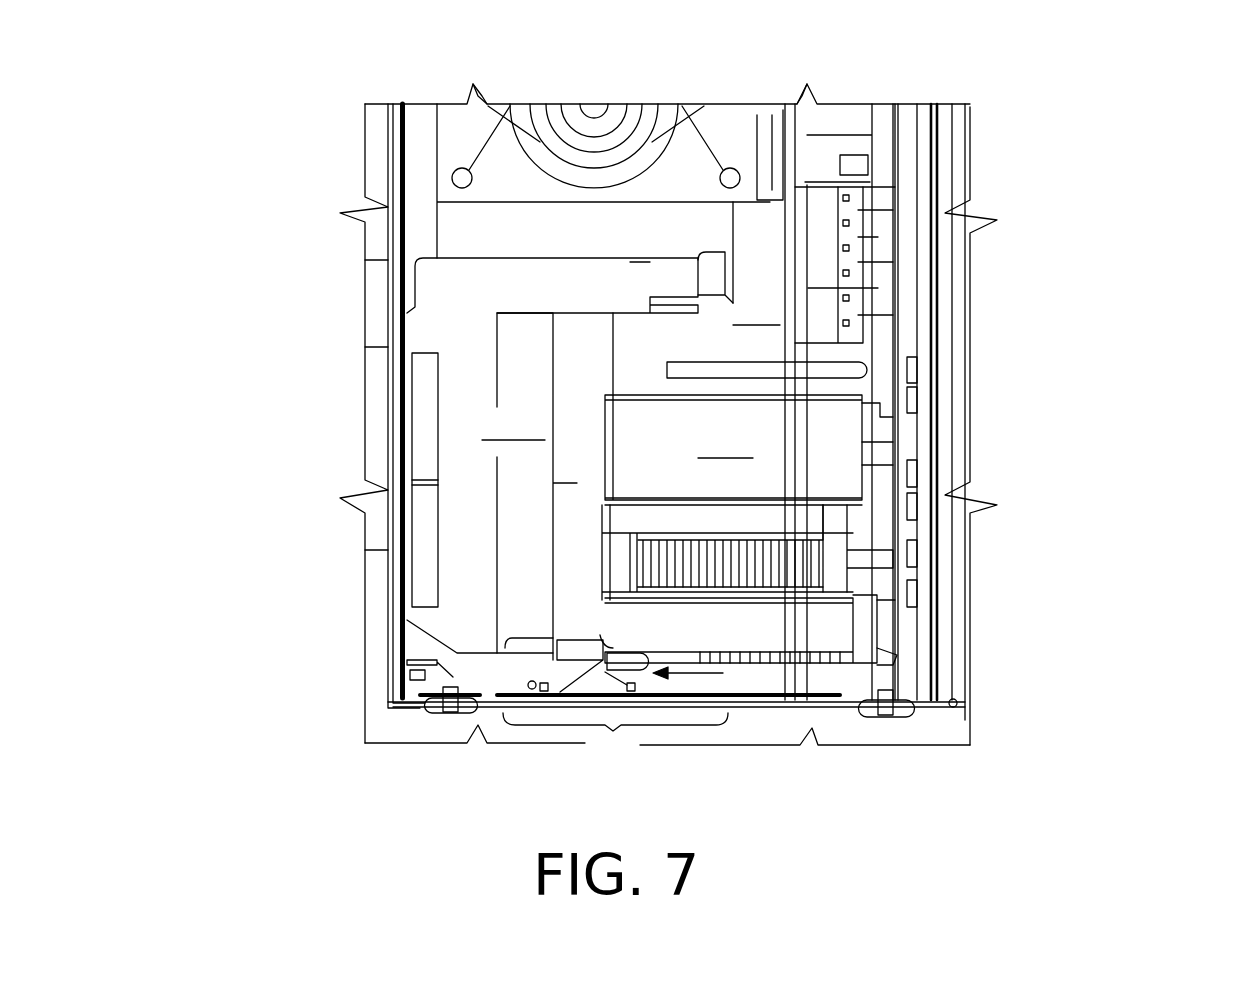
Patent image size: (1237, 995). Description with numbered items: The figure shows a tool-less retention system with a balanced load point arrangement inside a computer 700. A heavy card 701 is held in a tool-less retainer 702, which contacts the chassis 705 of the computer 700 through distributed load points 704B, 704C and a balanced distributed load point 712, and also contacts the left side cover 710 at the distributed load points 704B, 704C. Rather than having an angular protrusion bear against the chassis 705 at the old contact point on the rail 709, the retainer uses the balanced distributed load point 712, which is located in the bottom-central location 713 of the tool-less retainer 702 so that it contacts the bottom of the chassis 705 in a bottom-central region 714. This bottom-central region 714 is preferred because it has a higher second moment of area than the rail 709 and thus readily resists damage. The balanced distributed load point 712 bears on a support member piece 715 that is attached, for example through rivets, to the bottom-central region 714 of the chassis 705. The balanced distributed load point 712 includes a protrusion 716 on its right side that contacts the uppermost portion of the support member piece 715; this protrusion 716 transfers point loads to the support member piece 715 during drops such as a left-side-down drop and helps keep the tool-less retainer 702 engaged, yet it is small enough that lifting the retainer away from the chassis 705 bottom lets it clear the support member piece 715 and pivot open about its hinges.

The computer 700 is at (1045, 148).
The heavy card 701 is at (749, 450).
The tool-less retainer 702 is at (547, 486).
The distributed load point 704B is at (400, 347).
The distributed load point 704C is at (400, 547).
The chassis 705 is at (747, 702).
The rail 709 is at (440, 662).
The left side cover 710 is at (367, 260).
The balanced distributed load point 712 is at (592, 665).
The bottom-central location 713 is at (623, 627).
The bottom-central region 714 is at (615, 737).
The support member piece 715 is at (643, 695).
The protrusion 716 is at (640, 660).